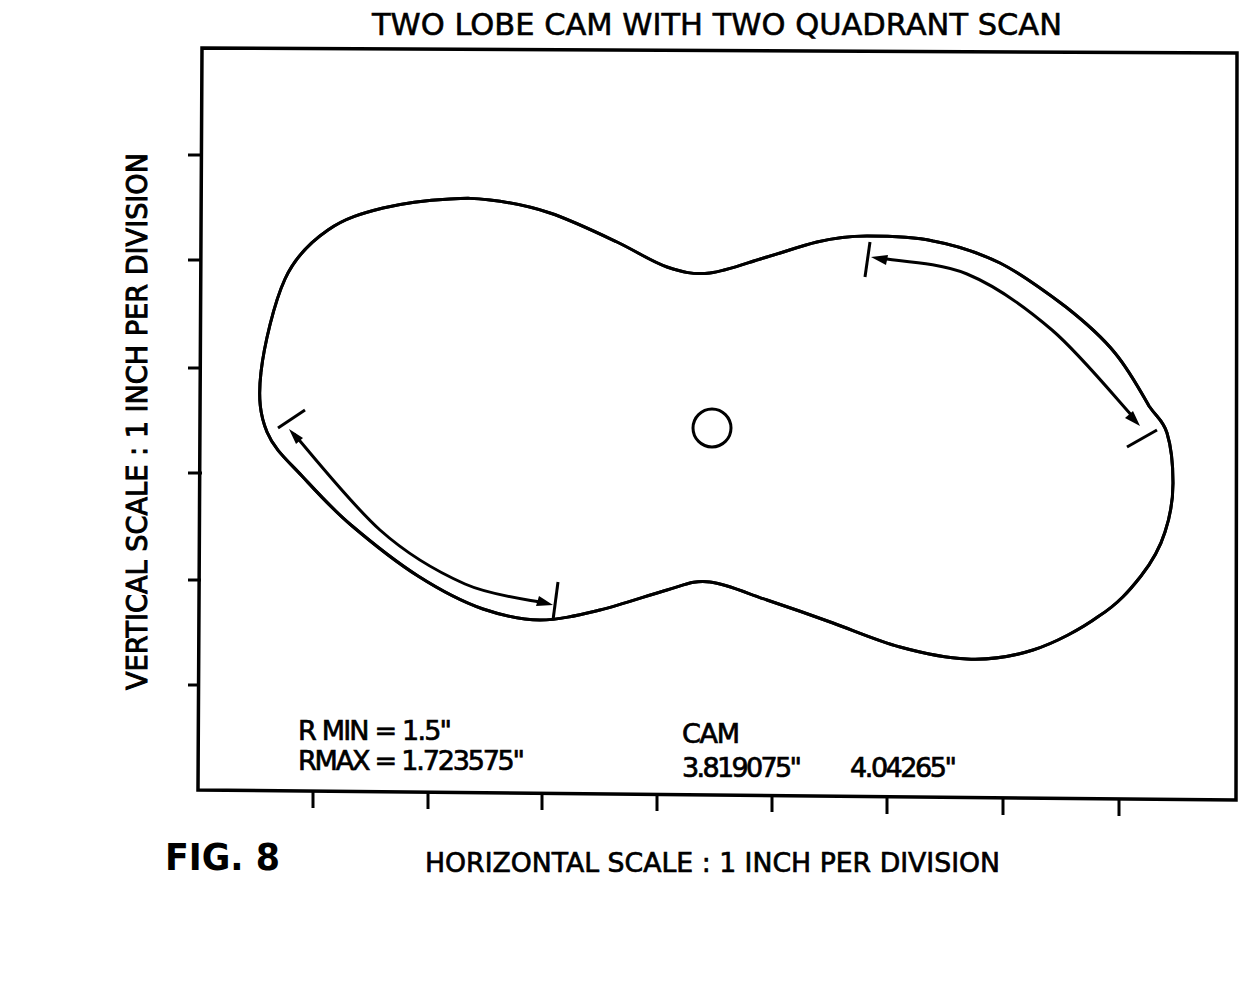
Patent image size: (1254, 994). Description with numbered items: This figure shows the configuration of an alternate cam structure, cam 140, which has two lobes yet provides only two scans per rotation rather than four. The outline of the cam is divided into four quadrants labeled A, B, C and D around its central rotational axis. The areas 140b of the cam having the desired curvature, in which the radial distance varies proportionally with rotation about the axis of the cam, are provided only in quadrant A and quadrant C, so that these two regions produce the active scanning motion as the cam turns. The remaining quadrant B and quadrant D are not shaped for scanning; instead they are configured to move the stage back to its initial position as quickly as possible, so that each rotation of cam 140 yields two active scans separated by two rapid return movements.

The cam 140 is at (716, 428).
The areas of the cam having the desired curvature 140b is at (717, 431).
The quadrant A is at (941, 359).
The quadrant B is at (485, 285).
The quadrant C is at (485, 496).
The quadrant D is at (941, 571).